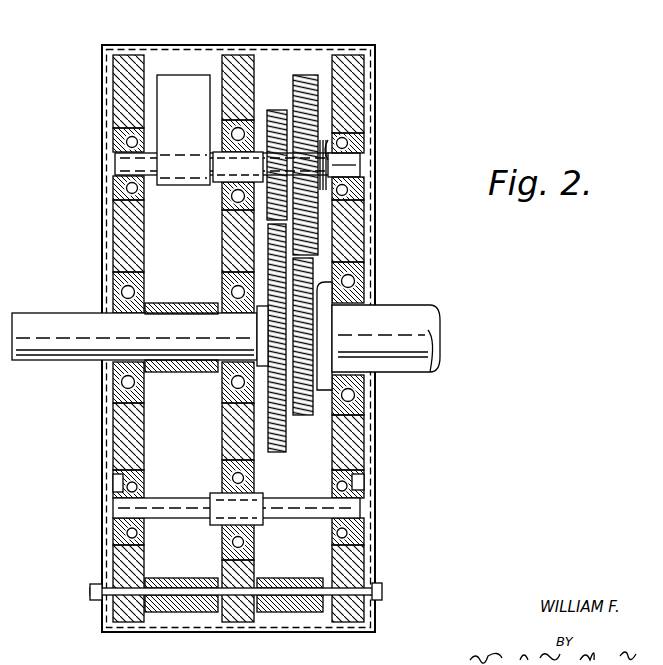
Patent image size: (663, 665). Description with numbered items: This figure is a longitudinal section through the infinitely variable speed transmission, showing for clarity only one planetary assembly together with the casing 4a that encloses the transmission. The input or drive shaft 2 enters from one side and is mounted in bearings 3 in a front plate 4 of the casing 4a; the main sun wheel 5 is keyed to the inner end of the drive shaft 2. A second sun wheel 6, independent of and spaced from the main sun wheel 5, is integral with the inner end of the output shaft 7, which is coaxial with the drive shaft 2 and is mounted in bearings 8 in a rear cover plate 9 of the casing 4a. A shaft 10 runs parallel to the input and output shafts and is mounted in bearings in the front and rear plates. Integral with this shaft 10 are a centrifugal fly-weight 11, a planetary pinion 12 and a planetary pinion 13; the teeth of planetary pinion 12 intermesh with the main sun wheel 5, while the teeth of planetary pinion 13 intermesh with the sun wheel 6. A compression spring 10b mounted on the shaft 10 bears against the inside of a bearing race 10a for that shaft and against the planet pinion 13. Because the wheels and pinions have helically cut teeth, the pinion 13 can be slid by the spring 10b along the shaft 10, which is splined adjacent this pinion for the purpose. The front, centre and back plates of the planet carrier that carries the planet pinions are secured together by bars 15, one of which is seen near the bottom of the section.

The input shaft 2 is at (68, 330).
The bearings 3 is at (126, 490).
The front plate 4 is at (104, 522).
The casing 4a is at (360, 42).
The main sun wheel 5 is at (273, 353).
The second sun wheel 6 is at (304, 416).
The output shaft 7 is at (422, 320).
The bearings 8 is at (355, 396).
The rear cover plate 9 is at (372, 506).
The shaft 10 is at (352, 164).
The bearing race 10a is at (357, 138).
The compression spring 10b is at (331, 140).
The centrifugal fly-weight 11 is at (176, 78).
The planetary pinion 12 is at (273, 110).
The planetary pinion 13 is at (306, 75).
The bars 15 is at (289, 594).